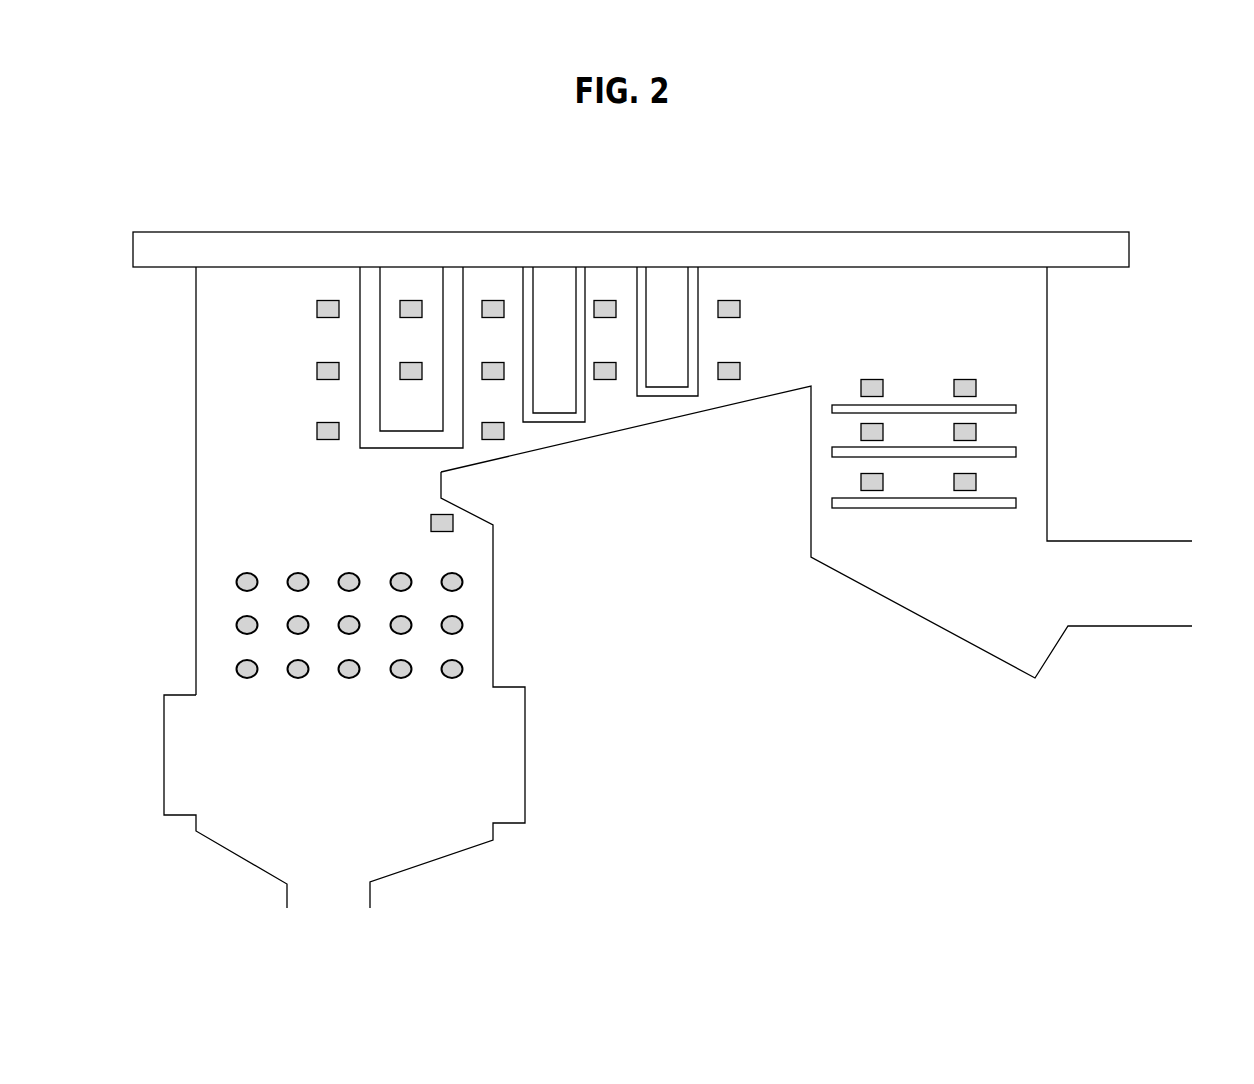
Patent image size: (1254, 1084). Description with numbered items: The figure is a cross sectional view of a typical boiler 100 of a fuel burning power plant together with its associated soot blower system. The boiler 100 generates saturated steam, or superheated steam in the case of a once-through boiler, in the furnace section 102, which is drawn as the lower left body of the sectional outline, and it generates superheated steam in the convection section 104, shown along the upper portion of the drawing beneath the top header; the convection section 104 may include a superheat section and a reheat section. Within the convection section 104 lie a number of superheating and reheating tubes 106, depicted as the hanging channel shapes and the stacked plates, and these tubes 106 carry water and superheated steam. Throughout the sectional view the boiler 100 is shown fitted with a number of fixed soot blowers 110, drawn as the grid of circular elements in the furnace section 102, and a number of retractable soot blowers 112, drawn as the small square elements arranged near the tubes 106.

The boiler 100 is at (827, 735).
The furnace section 102 is at (288, 760).
The convection section 104 is at (218, 351).
The superheating and reheating tubes 106 is at (458, 303).
The fixed soot blowers 110 is at (468, 592).
The retractable soot blowers 112 is at (850, 490).